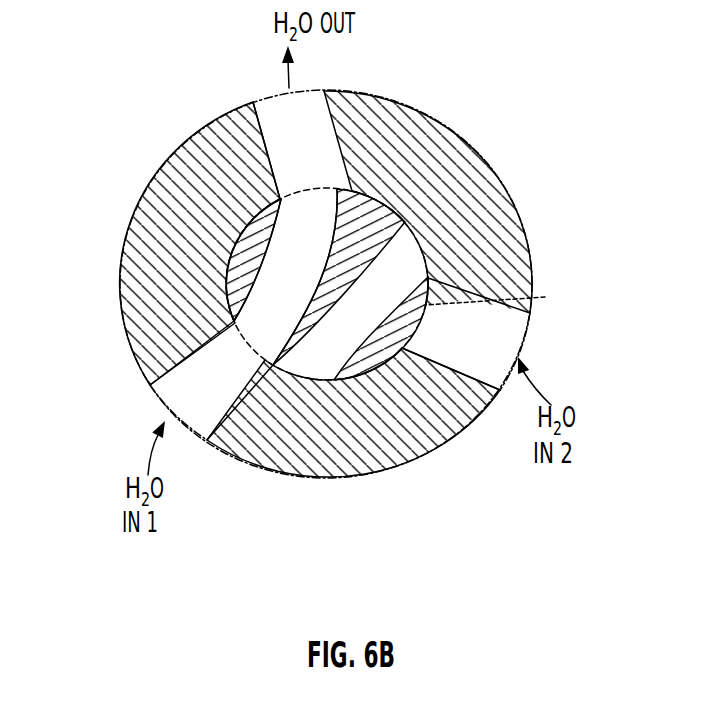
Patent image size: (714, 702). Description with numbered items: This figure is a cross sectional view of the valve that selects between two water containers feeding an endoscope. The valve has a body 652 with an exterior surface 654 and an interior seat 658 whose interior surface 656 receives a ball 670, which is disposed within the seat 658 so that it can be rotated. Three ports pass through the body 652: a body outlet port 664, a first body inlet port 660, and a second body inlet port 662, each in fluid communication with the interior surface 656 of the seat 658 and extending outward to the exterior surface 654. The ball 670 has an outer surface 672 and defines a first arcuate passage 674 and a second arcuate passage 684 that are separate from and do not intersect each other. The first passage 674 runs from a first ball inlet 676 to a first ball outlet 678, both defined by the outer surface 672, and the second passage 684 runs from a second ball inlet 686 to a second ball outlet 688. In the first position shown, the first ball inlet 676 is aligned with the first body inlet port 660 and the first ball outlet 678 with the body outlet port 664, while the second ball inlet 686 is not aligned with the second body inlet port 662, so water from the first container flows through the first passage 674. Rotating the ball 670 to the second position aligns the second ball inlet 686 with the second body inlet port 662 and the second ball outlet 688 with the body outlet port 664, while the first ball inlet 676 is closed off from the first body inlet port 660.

The body 652 is at (500, 168).
The exterior surface 654 is at (521, 258).
The interior surface 656 is at (425, 432).
The interior seat 658 is at (377, 461).
The first body inlet port 660 is at (170, 398).
The second body inlet port 662 is at (505, 336).
The body outlet port 664 is at (277, 117).
The ball 670 is at (358, 384).
The outer surface 672 is at (545, 297).
The first arcuate passage 674 is at (288, 270).
The first ball inlet 676 is at (245, 343).
The first ball outlet 678 is at (313, 187).
The second arcuate passage 684 is at (433, 370).
The second ball inlet 686 is at (297, 380).
The second ball outlet 688 is at (425, 262).